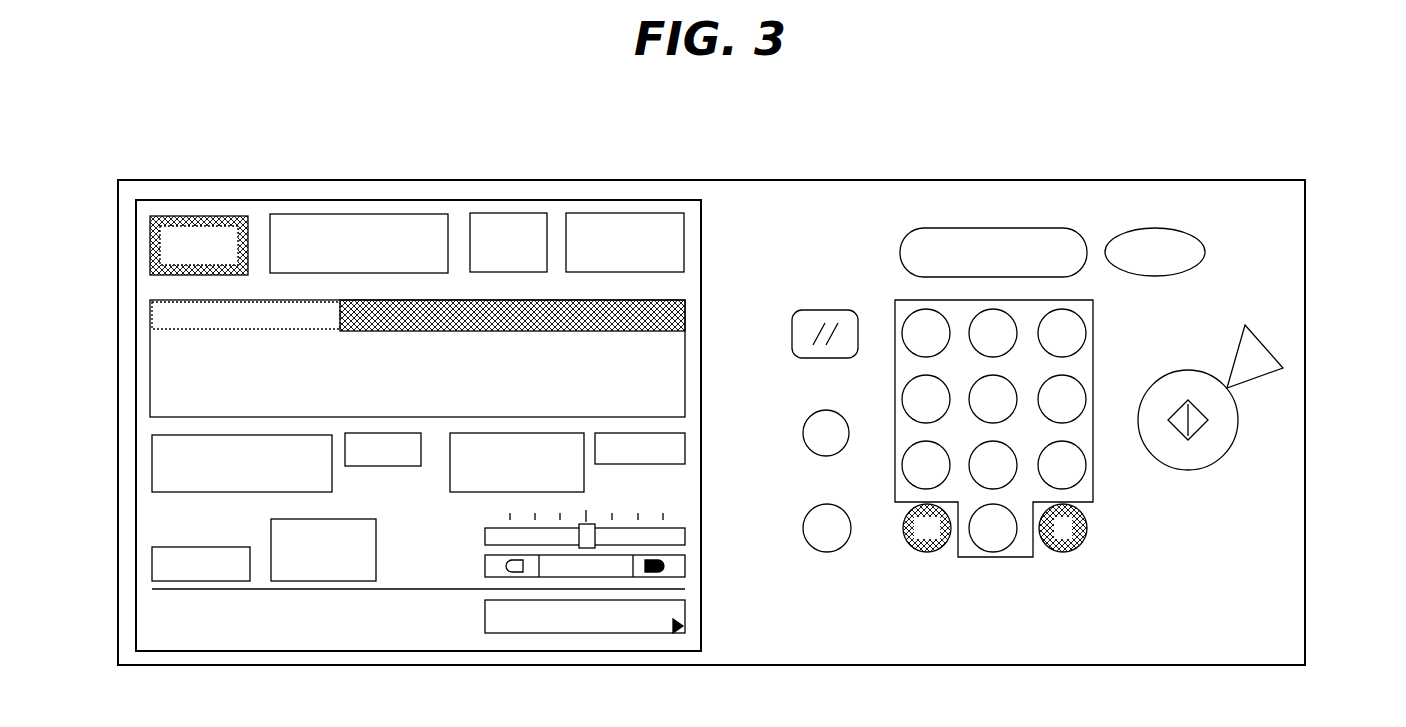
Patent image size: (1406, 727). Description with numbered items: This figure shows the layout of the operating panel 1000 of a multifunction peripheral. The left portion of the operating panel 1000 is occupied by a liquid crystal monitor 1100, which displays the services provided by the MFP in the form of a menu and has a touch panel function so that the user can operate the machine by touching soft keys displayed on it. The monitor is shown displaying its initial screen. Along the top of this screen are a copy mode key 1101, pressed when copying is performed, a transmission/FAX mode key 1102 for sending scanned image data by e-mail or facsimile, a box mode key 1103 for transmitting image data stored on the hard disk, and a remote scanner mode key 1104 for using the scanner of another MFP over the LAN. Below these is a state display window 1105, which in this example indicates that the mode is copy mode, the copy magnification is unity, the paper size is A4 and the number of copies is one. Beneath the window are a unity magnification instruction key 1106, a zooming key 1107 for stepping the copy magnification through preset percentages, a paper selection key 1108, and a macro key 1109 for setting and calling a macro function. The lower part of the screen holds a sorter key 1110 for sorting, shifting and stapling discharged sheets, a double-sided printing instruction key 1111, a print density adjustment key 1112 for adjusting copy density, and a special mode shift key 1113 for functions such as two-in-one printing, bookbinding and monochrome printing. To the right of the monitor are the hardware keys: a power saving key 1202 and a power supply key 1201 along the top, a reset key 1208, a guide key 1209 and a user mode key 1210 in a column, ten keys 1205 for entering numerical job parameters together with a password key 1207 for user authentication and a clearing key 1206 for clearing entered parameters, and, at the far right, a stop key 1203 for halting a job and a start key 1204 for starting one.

The operating panel 1000 is at (1183, 178).
The liquid crystal monitor 1100 is at (701, 228).
The copy mode key 1101 is at (225, 216).
The transmission/FAX mode key 1102 is at (427, 214).
The box mode key 1103 is at (517, 213).
The remote scanner mode key 1104 is at (640, 213).
The state display window 1105 is at (685, 315).
The unity magnification instruction key 1106 is at (152, 455).
The zooming key 1107 is at (372, 466).
The paper selection key 1108 is at (493, 492).
The macro key 1109 is at (685, 455).
The sorter key 1110 is at (152, 562).
The double-sided printing instruction key 1111 is at (323, 581).
The print density adjustment key 1112 is at (685, 565).
The special mode shift key 1113 is at (685, 622).
The power supply key 1201 is at (1197, 233).
The power saving key 1202 is at (1082, 228).
The stop key 1203 is at (1267, 348).
The start key 1204 is at (1238, 423).
The ten keys 1205 is at (1095, 338).
The clearing key 1206 is at (1090, 528).
The password key 1207 is at (902, 526).
The reset key 1208 is at (812, 308).
The guide key 1209 is at (803, 432).
The user mode key 1210 is at (803, 527).